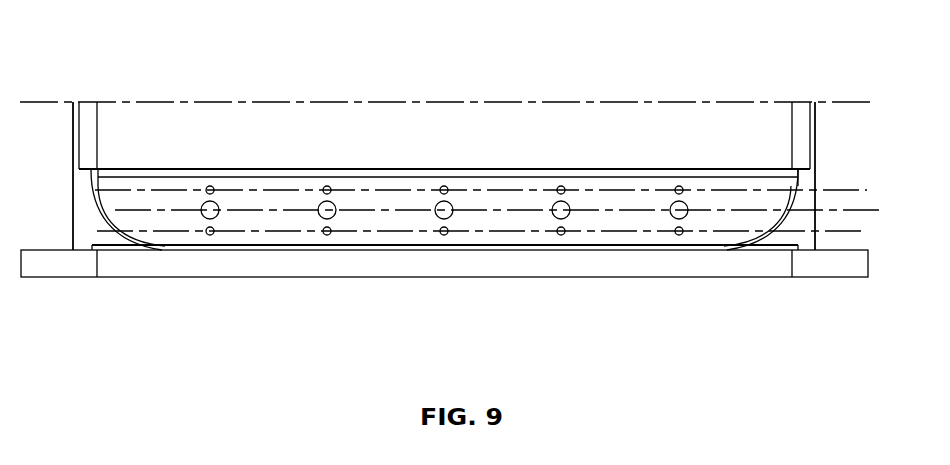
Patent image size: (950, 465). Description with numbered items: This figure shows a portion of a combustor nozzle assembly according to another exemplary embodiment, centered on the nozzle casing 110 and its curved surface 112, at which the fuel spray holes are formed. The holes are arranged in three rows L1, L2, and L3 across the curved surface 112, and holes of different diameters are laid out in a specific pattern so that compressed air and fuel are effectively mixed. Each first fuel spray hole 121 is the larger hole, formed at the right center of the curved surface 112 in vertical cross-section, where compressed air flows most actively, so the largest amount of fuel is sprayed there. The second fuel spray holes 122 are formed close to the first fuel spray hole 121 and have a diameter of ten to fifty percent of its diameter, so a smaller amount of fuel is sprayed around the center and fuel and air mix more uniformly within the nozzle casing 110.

The nozzle casing 110 is at (814, 133).
The curved surface 112 is at (106, 229).
The first fuel spray hole 121 is at (318, 212).
The second fuel spray hole 122 is at (329, 189).
The row L1 is at (492, 232).
The row L2 is at (510, 211).
The row L3 is at (491, 190).